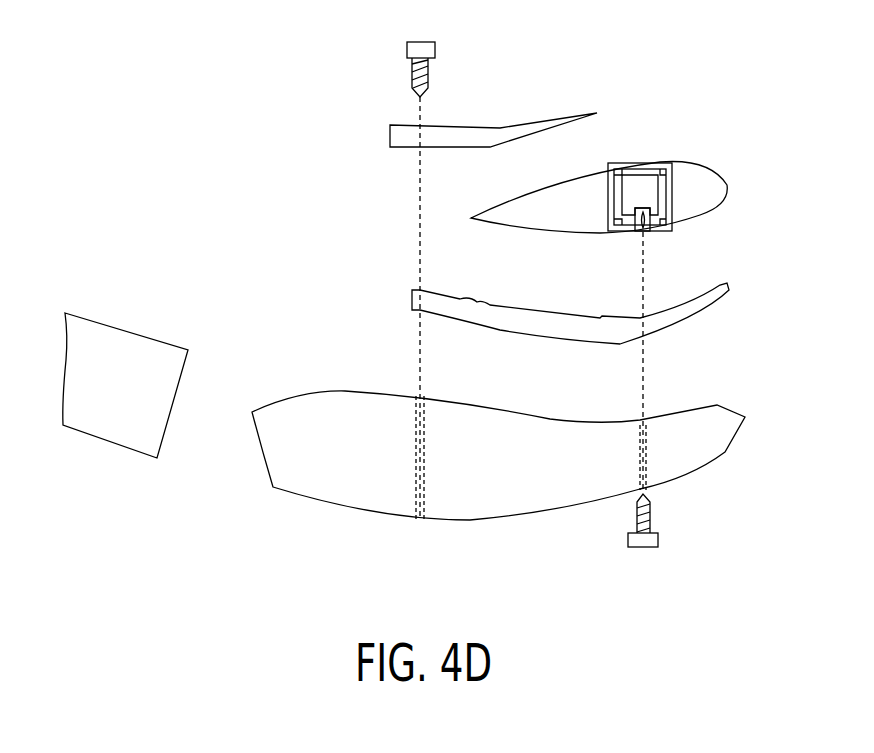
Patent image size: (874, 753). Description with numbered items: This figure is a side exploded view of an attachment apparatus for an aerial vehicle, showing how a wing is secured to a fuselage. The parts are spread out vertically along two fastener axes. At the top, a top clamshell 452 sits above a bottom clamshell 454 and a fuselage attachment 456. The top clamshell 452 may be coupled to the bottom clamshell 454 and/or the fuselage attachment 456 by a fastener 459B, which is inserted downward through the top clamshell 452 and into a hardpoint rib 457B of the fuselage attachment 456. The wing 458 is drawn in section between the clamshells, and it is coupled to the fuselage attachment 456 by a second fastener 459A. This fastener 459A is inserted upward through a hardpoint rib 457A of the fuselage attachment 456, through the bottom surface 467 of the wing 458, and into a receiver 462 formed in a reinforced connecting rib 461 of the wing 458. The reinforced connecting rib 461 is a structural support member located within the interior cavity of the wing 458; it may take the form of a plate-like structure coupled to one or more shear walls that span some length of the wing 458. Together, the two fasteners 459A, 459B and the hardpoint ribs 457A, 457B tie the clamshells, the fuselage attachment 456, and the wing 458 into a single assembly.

The top clamshell 452 is at (533, 124).
The bottom clamshell 454 is at (712, 310).
The fuselage attachment 456 is at (745, 437).
The hardpoint rib 457A is at (645, 462).
The hardpoint rib 457B is at (422, 478).
The wing 458 is at (608, 168).
The fastener 459A is at (650, 540).
The fastener 459B is at (406, 48).
The reinforced connecting rib 461 is at (648, 180).
The receiver 462 is at (648, 210).
The bottom surface 467 is at (589, 236).